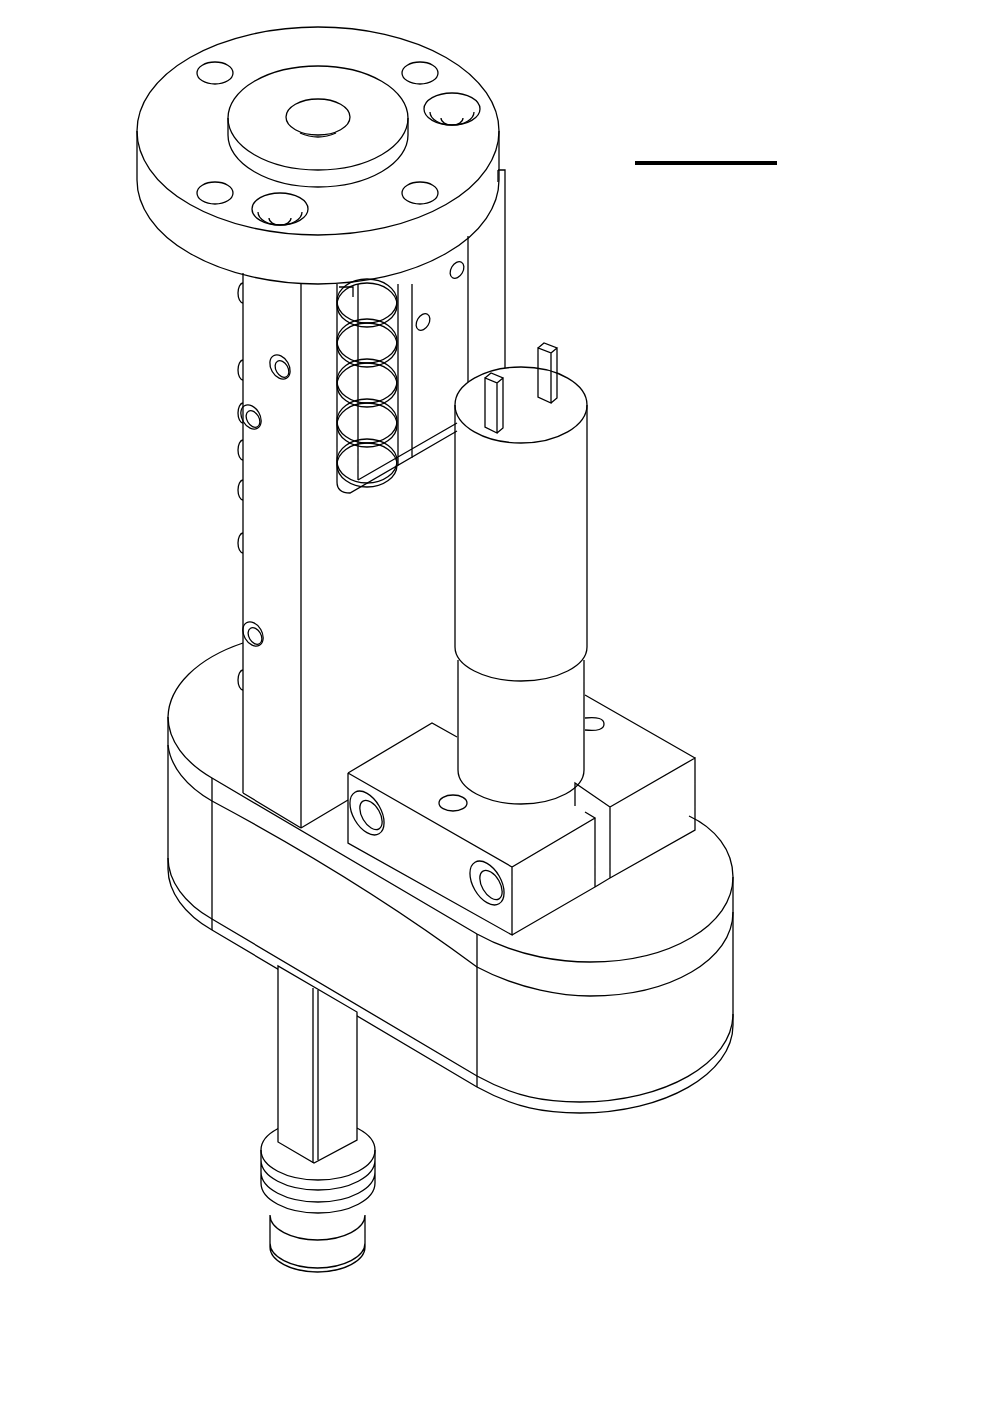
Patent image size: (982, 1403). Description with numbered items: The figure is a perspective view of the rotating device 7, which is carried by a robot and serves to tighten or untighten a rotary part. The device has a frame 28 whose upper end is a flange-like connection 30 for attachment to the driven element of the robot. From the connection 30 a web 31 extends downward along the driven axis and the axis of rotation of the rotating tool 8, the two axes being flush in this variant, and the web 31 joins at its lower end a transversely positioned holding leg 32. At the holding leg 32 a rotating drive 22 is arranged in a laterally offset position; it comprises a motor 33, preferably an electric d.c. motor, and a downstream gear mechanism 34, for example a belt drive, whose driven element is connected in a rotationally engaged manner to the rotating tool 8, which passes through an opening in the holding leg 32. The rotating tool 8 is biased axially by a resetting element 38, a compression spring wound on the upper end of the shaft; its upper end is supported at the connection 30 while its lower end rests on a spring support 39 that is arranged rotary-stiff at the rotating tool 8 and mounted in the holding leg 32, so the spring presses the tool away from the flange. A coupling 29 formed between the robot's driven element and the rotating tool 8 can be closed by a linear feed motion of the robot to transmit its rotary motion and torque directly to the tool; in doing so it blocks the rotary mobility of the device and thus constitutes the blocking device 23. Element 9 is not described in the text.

The rotating device 7 is at (439, 653).
The rotating tool 8 is at (310, 1100).
The threaded connector 9 is at (293, 1246).
The rotating drive 22 is at (595, 573).
The motor 33 is at (553, 564).
The blocking device 23 is at (345, 499).
The coupling 29 is at (345, 499).
The frame 28 is at (345, 416).
The flange-like connection 30 is at (200, 118).
The web 31 is at (492, 291).
The holding leg 32 is at (645, 1052).
The gear mechanism 34 is at (423, 901).
The resetting element 38 is at (374, 430).
The spring support 39 is at (241, 699).